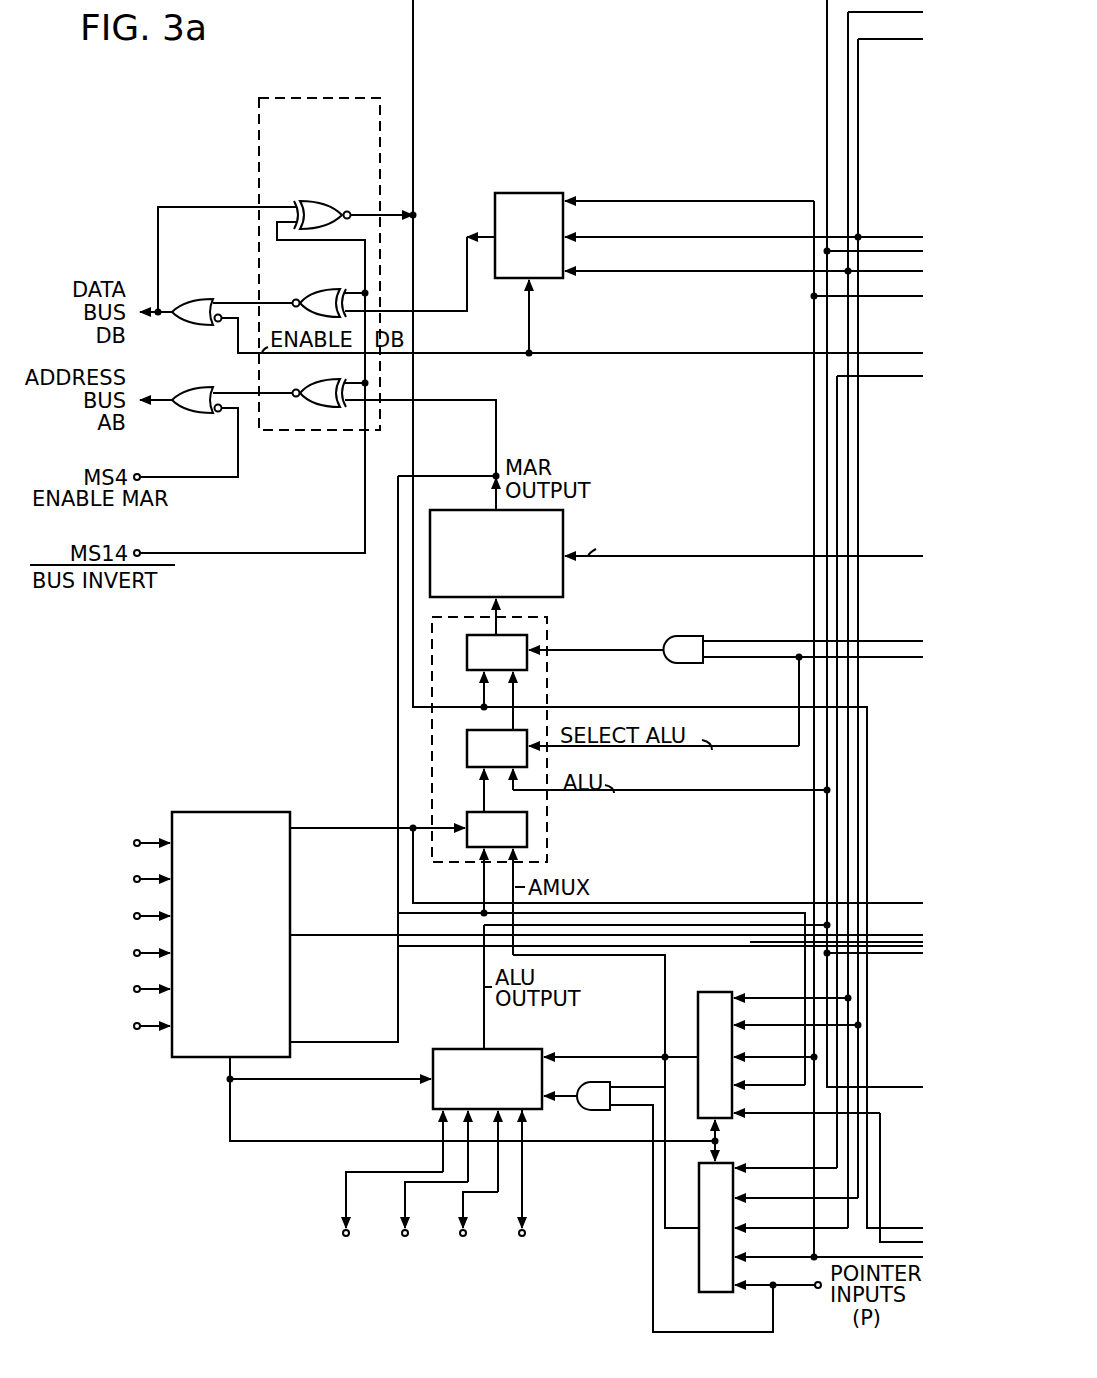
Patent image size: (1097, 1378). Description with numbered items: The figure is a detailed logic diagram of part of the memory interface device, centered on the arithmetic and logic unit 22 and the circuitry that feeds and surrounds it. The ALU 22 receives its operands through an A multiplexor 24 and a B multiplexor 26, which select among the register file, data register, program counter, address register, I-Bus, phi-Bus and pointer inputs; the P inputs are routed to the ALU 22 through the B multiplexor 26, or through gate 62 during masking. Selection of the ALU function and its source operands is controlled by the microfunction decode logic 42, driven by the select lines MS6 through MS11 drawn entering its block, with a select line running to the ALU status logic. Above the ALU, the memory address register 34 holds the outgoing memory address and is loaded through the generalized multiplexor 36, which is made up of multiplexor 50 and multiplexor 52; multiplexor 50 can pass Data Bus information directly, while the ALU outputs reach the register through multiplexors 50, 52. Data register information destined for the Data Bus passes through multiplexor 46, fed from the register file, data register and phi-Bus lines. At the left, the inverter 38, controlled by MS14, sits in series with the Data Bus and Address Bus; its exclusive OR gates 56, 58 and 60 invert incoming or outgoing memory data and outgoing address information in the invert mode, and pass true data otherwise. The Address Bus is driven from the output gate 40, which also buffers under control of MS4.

The arithmetic and logic unit 22 is at (447, 1049).
The A multiplexor 24 is at (712, 992).
The B multiplexor 26 is at (712, 1292).
The memory address register 34 is at (466, 510).
The generalized multiplexor 36 is at (606, 777).
The inverter 38 is at (259, 118).
The output gate 40 is at (178, 393).
The microfunction decode logic 42 is at (185, 812).
The multiplexor 46 is at (510, 193).
The multiplexor 50 is at (465, 662).
The multiplexor 52 is at (465, 756).
The exclusive OR gate 56 is at (305, 392).
The exclusive OR gate 58 is at (305, 298).
The exclusive OR gate 60 is at (330, 208).
The gate 62 is at (606, 1082).